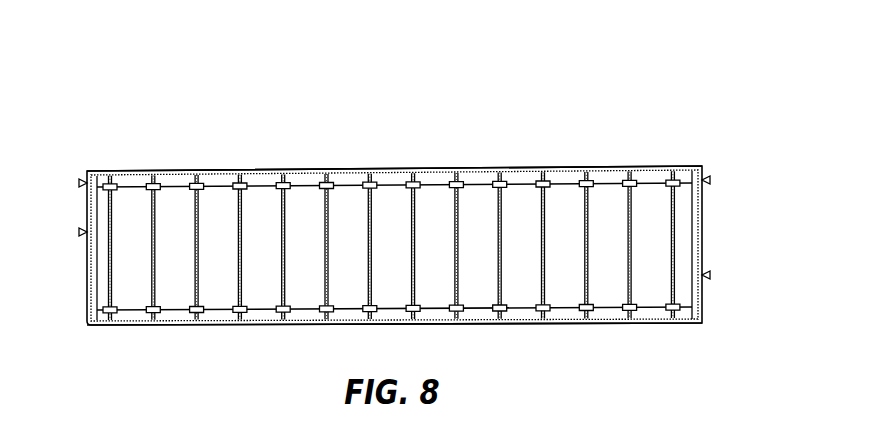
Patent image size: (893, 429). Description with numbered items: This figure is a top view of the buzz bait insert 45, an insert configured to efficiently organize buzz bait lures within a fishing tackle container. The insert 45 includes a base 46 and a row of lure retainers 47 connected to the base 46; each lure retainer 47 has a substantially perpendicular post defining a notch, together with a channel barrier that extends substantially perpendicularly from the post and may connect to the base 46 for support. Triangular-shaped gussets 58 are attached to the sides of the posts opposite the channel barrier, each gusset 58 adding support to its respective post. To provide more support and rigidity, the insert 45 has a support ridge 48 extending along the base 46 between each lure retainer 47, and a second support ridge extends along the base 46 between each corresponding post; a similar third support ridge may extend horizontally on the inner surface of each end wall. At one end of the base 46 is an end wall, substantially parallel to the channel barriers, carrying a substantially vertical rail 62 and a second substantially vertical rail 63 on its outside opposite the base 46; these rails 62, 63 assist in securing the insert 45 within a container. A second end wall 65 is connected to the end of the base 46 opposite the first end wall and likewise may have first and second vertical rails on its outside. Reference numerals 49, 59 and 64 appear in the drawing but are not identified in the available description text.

The buzz bait insert 45 is at (598, 122).
The base 46 is at (130, 208).
The lure retainer 47 is at (366, 184).
The support ridge 48 is at (433, 188).
The lower cross rail 49 is at (482, 308).
The gusset 58 is at (196, 181).
The lower clip 59 is at (200, 311).
The vertical rail 62 is at (80, 232).
The second vertical rail 63 is at (80, 183).
The right upper pin 64 is at (708, 180).
The second end wall 65 is at (708, 275).